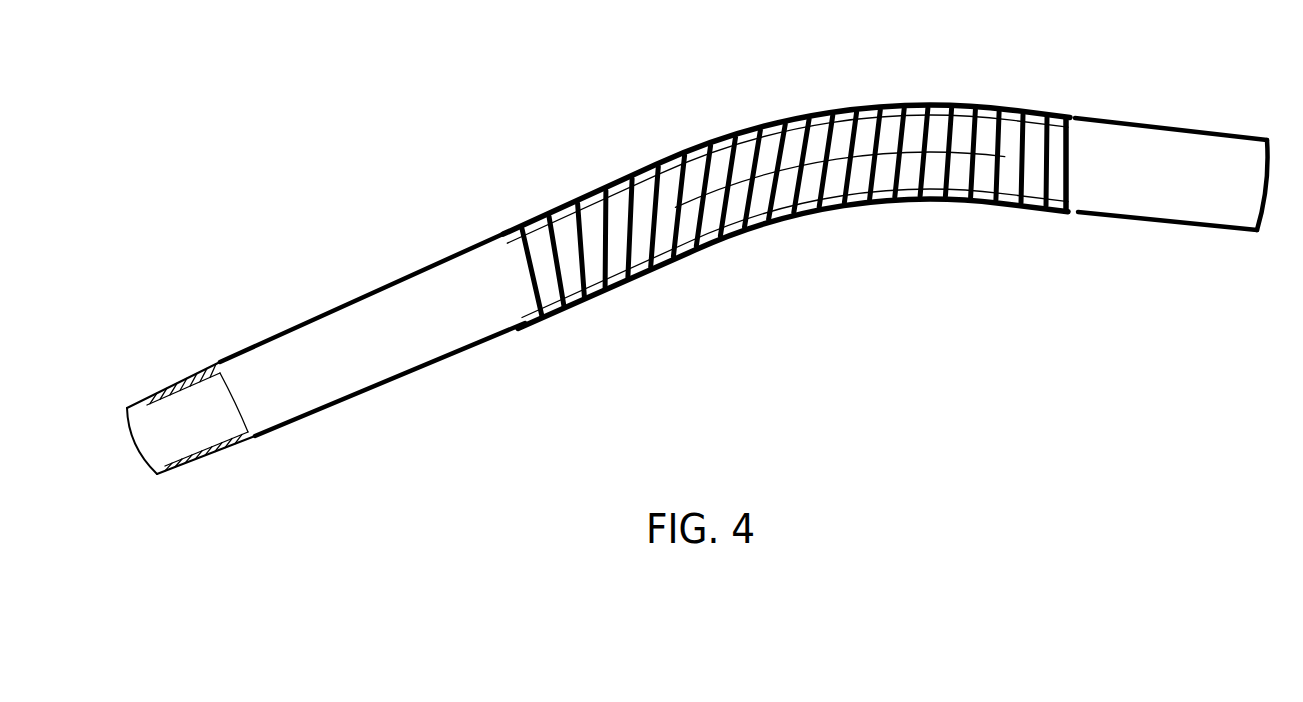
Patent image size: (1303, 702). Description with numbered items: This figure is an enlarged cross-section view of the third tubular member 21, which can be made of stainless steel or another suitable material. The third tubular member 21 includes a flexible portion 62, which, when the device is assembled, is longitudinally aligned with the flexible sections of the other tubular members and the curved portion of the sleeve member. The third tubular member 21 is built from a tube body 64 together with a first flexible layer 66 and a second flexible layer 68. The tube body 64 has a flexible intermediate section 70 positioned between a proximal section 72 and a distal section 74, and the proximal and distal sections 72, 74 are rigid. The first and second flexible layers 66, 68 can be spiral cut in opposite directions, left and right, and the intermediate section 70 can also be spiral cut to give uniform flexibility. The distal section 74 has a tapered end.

The third tubular member 21 is at (480, 92).
The flexible portion 62 is at (838, 84).
The tube body 64 is at (468, 350).
The first flexible layer 66 is at (518, 330).
The second flexible layer 68 is at (530, 330).
The flexible intermediate section 70 is at (505, 250).
The proximal section 72 is at (1148, 220).
The distal section 74 is at (187, 367).